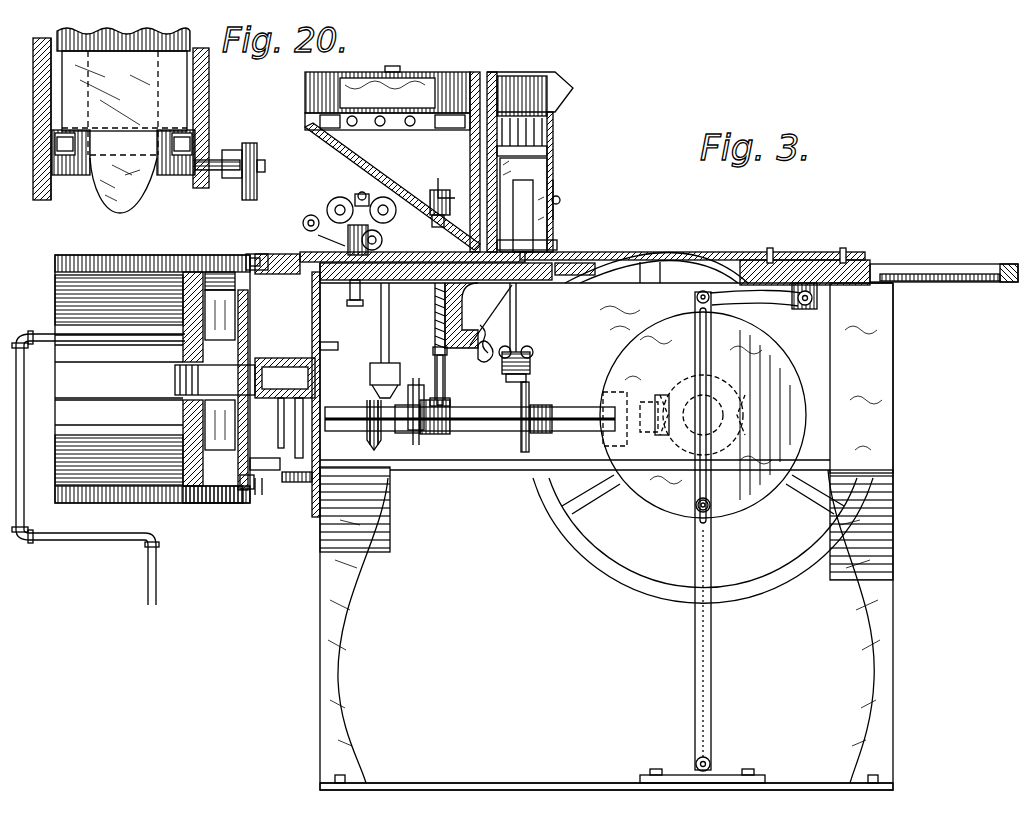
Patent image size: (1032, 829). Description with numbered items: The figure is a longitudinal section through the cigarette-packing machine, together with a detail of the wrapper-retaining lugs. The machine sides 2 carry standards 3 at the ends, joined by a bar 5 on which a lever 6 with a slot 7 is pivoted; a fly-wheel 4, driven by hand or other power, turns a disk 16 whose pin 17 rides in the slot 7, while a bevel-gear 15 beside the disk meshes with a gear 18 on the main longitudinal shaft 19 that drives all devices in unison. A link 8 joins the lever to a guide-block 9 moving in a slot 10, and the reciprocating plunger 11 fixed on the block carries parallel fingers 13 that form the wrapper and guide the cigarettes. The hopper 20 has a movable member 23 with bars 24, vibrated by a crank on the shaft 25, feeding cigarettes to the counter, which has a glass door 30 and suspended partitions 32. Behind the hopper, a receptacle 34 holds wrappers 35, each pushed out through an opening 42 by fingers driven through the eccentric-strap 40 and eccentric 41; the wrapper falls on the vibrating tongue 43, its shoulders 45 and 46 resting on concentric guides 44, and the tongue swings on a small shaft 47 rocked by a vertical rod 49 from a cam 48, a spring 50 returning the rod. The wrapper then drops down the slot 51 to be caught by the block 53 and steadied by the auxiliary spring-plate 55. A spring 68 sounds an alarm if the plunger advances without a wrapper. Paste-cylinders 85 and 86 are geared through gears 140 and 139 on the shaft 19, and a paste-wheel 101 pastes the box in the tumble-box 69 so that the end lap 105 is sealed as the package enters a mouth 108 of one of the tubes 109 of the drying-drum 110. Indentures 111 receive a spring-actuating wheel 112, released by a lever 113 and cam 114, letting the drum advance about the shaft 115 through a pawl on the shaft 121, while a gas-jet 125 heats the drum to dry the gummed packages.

In FIG. 3, the sides 2 is at (746, 378).
In FIG. 3, the standards 3 is at (606, 526).
In FIG. 3, the fly-wheel 4 is at (782, 575).
In FIG. 3, the bar 5 is at (540, 783).
In FIG. 3, the lever 6 is at (706, 680).
In FIG. 3, the slot 7 is at (712, 540).
In FIG. 3, the link 8 is at (780, 312).
In FIG. 3, the guide-block 9 is at (872, 262).
In FIG. 3, the slot 10 is at (946, 262).
In FIG. 3, the reciprocating plunger 11 is at (628, 252).
In FIG. 3, the fingers 13 is at (500, 250).
In FIG. 3, the bevel-gear 15 is at (690, 462).
In FIG. 3, the disk 16 is at (778, 488).
In FIG. 3, the pin 17 is at (696, 507).
In FIG. 3, the gear 18 is at (668, 392).
In FIG. 3, the main longitudinal shaft 19 is at (565, 407).
In FIG. 3, the hopper 20 is at (530, 162).
In FIG. 3, the movable member 23 is at (548, 151).
In FIG. 3, the bars 24 is at (540, 130).
In FIG. 3, the shaft 25 is at (518, 335).
In FIG. 3, the glass door 30 is at (556, 240).
In FIG. 3, the partitions 32 is at (523, 205).
In FIG. 3, the receptacle 34 is at (387, 89).
In FIG. 20, the wrapper 35 is at (124, 103).
In FIG. 3, the eccentric-strap 40 is at (412, 372).
In FIG. 3, the eccentric 41 is at (420, 437).
In FIG. 3, the opening 42 is at (387, 122).
In FIG. 20, the vibrating tongue 43 is at (135, 36).
In FIG. 3, the vibrating tongue 43 is at (395, 168).
In FIG. 20, the concentric guides 44 is at (60, 146).
In FIG. 3, the concentric guides 44 is at (442, 188).
In FIG. 20, the shoulder 45 is at (78, 132).
In FIG. 20, the shoulder 46 is at (168, 132).
In FIG. 20, the small shaft 47 is at (200, 172).
In FIG. 3, the small shaft 47 is at (447, 225).
In FIG. 20, the cam 48 is at (242, 180).
In FIG. 3, the cam 48 is at (440, 402).
In FIG. 20, the vertical rod 49 is at (258, 172).
In FIG. 3, the vertical rod 49 is at (444, 370).
In FIG. 3, the spring 50 is at (424, 341).
In FIG. 3, the slot 51 is at (496, 292).
In FIG. 3, the block 53 is at (489, 357).
In FIG. 3, the auxiliary spring-plate 55 is at (518, 305).
In FIG. 3, the spring 68 is at (350, 306).
In FIG. 3, the tumble-box 69 is at (320, 256).
In FIG. 3, the paste-cylinder 85 is at (365, 195).
In FIG. 3, the paste-cylinder 86 is at (326, 201).
In FIG. 3, the paste-wheel 101 is at (305, 220).
In FIG. 20, the end lap 105 is at (112, 186).
In FIG. 3, the mouth 108 is at (245, 252).
In FIG. 3, the tubes 109 is at (152, 368).
In FIG. 3, the drying-drum 110 is at (200, 505).
In FIG. 3, the indentures 111 is at (250, 472).
In FIG. 3, the spring-actuating wheel 112 is at (245, 488).
In FIG. 3, the lever 113 is at (292, 483).
In FIG. 3, the cam 114 is at (306, 405).
In FIG. 3, the shaft 115 is at (245, 378).
In FIG. 3, the shaft 121 is at (338, 346).
In FIG. 3, the gas-jet 125 is at (98, 468).
In FIG. 3, the gear 139 is at (524, 455).
In FIG. 3, the gear 140 is at (532, 376).